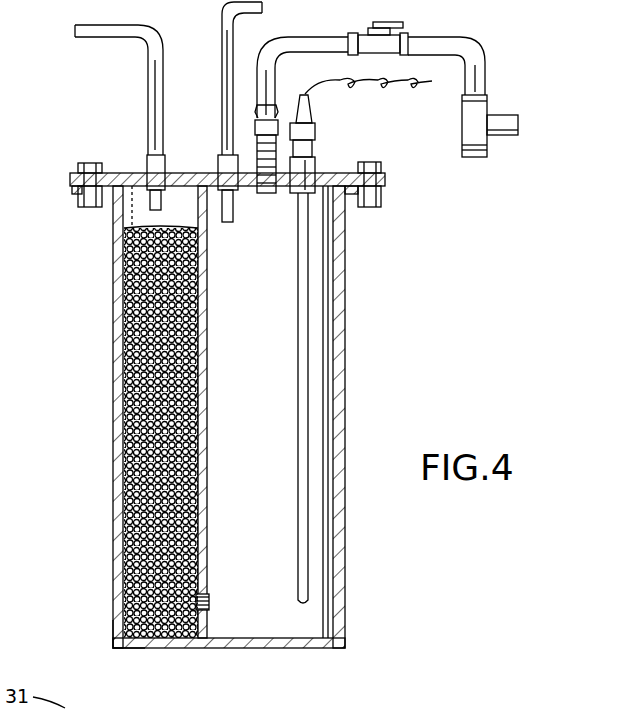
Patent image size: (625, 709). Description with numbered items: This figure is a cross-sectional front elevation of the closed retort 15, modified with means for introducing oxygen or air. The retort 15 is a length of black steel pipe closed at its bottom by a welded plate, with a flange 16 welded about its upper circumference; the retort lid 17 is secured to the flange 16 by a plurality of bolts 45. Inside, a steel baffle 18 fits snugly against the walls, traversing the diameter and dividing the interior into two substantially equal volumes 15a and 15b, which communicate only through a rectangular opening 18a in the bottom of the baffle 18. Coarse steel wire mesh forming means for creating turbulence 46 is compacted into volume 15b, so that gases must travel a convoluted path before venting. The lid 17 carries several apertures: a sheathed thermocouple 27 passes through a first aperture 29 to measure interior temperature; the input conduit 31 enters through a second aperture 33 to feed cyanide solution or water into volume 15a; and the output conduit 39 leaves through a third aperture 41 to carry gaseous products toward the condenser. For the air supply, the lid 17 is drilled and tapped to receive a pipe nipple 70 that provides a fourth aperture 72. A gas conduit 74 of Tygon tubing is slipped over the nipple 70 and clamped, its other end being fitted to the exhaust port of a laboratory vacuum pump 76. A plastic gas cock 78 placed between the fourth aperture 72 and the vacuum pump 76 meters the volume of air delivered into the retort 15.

The closed retort 15 is at (345, 607).
The retort volume 15a is at (247, 625).
The retort volume 15b is at (140, 645).
The flange 16 is at (385, 188).
The retort lid 17 is at (130, 172).
The baffle 18 is at (207, 337).
The opening 18a is at (209, 602).
The thermocouple 27 is at (300, 397).
The first aperture 29 is at (318, 153).
The input conduit 31 is at (220, 8).
The second aperture 33 is at (218, 170).
The output conduit 39 is at (115, 25).
The third aperture 41 is at (169, 172).
The bolts 45 is at (375, 165).
The means for creating turbulence 46 is at (125, 467).
The nipple 70 is at (262, 194).
The fourth aperture 72 is at (276, 194).
The gas conduit 74 is at (328, 36).
The vacuum pump 76 is at (483, 158).
The gas cock 78 is at (400, 38).